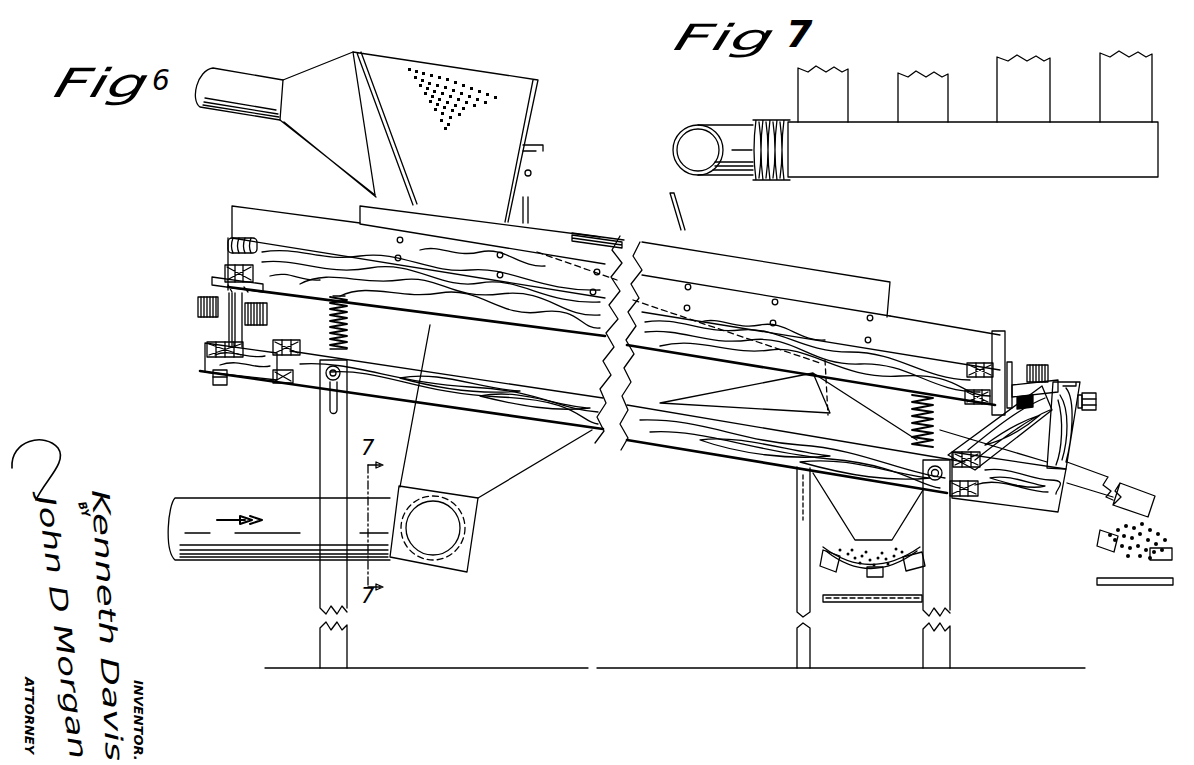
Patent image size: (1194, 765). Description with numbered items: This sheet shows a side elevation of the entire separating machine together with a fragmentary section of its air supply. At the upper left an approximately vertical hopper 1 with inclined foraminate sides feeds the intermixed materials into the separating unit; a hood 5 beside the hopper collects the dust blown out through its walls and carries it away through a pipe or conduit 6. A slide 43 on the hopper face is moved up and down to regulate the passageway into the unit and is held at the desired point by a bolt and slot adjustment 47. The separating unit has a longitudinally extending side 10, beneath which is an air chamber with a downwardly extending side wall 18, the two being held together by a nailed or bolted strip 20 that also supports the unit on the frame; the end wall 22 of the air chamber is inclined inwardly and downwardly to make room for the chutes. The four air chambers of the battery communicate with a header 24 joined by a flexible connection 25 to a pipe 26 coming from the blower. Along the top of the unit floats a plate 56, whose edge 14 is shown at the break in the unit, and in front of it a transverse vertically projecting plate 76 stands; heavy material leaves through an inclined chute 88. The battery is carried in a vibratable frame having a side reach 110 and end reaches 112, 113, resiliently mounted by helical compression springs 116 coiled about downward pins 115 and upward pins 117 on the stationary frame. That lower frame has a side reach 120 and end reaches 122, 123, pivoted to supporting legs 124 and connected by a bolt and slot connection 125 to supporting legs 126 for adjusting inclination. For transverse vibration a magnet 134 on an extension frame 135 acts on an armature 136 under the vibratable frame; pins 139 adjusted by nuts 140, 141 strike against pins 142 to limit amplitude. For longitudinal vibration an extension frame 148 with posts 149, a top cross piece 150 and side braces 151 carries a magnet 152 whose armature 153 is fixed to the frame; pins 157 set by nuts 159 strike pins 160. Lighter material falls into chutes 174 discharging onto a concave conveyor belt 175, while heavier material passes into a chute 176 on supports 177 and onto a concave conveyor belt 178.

In FIG. 6, the hopper 1 is at (497, 87).
In FIG. 6, the hood 5 is at (318, 77).
In FIG. 6, the pipe or conduit 6 is at (247, 83).
In FIG. 6, the side 10 is at (433, 215).
In FIG. 6, the plate edge 14 is at (620, 243).
In FIG. 6, the side wall 18 is at (550, 452).
In FIG. 6, the strip 20 is at (322, 227).
In FIG. 7, the end wall 22 is at (923, 95).
In FIG. 6, the header 24 is at (478, 527).
In FIG. 7, the header 24 is at (990, 173).
In FIG. 7, the flexible connection 25 is at (775, 120).
In FIG. 6, the pipe 26 is at (259, 480).
In FIG. 7, the pipe 26 is at (707, 108).
In FIG. 6, the slide 43 is at (532, 153).
In FIG. 6, the bolt and slot adjustment 47 is at (532, 173).
In FIG. 6, the plate 56 is at (607, 240).
In FIG. 6, the plate 76 is at (680, 207).
In FIG. 6, the chute 88 is at (822, 393).
In FIG. 6, the side reach 110 is at (530, 323).
In FIG. 6, the end reach 112 is at (233, 243).
In FIG. 6, the end reach 113 is at (985, 360).
In FIG. 6, the pin 115 is at (347, 307).
In FIG. 6, the helical compression spring 116 is at (347, 333).
In FIG. 6, the pin 117 is at (333, 350).
In FIG. 6, the side reach 120 is at (670, 443).
In FIG. 6, the end reach 122 is at (280, 383).
In FIG. 6, the end reach 123 is at (965, 498).
In FIG. 6, the supporting leg 124 is at (957, 582).
In FIG. 6, the bolt and slot connection 125 is at (337, 400).
In FIG. 6, the supporting leg 126 is at (323, 453).
In FIG. 6, the magnet 134 is at (220, 320).
In FIG. 6, the extension frame 135 is at (255, 372).
In FIG. 6, the armature 136 is at (217, 287).
In FIG. 6, the pin 139 is at (230, 325).
In FIG. 6, the nut 140 is at (210, 352).
In FIG. 6, the nut 141 is at (213, 380).
In FIG. 6, the pin 142 is at (213, 278).
In FIG. 6, the extension frame 148 is at (1037, 503).
In FIG. 6, the post 149 is at (1070, 450).
In FIG. 6, the top cross piece 150 is at (1040, 395).
In FIG. 6, the side brace 151 is at (1068, 430).
In FIG. 6, the magnet 152 is at (1043, 375).
In FIG. 6, the armature 153 is at (1018, 377).
In FIG. 6, the pin 157 is at (1037, 388).
In FIG. 6, the nut 159 is at (1090, 395).
In FIG. 6, the pin 160 is at (1007, 357).
In FIG. 6, the chute 174 is at (1092, 475).
In FIG. 6, the concave conveyor belt 175 is at (1130, 577).
In FIG. 6, the chute 176 is at (860, 490).
In FIG. 6, the support 177 is at (800, 541).
In FIG. 6, the concave conveyor belt 178 is at (890, 572).